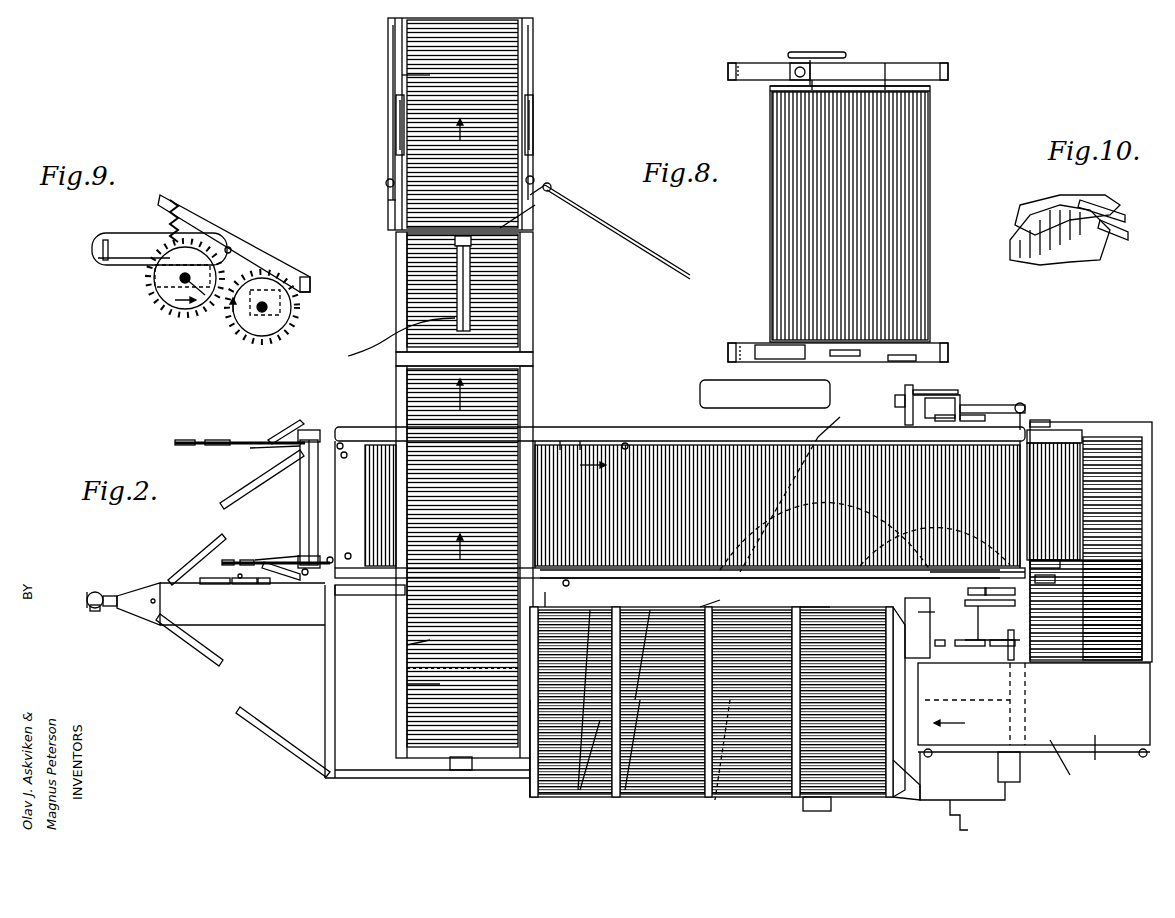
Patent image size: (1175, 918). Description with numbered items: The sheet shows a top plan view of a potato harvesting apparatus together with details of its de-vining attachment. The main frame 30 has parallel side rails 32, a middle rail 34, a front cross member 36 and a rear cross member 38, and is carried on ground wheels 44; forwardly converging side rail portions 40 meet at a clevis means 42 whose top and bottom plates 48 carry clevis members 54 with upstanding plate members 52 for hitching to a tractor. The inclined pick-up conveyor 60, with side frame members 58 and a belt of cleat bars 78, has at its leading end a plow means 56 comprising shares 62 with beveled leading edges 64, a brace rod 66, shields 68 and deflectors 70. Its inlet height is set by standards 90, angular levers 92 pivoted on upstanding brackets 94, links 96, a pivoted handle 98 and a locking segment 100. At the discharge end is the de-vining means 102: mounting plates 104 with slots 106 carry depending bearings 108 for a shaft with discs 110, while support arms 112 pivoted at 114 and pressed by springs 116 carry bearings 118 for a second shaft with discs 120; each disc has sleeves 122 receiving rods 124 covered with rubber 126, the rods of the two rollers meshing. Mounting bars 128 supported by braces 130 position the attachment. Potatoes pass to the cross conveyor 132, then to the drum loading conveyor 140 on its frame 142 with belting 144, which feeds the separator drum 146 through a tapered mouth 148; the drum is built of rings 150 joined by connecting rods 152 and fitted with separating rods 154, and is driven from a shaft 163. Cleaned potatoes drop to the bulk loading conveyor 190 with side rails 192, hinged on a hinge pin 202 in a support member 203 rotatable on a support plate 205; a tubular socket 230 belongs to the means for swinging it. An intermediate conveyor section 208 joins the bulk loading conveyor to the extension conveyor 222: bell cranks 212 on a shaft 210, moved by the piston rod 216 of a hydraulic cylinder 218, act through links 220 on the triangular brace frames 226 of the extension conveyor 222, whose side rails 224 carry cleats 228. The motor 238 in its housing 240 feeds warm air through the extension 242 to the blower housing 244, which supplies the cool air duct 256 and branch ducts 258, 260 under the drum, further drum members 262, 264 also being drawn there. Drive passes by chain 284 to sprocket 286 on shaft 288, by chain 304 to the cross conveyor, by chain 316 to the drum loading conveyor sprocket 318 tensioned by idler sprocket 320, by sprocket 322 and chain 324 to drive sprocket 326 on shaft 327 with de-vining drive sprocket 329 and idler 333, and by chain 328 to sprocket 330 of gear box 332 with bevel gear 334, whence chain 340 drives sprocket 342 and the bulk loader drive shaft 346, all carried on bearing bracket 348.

In FIG. 2, the main frame 30 is at (325, 778).
In FIG. 2, the side rails 32 is at (610, 427).
In FIG. 2, the middle rail 34 is at (368, 590).
In FIG. 2, the front cross member 36 is at (325, 686).
In FIG. 2, the rear cross member 38 is at (1020, 770).
In FIG. 2, the forwardly converging side rail portions 40 is at (220, 503).
In FIG. 2, the clevis means 42 is at (93, 590).
In FIG. 2, the ground wheels 44 is at (706, 398).
In FIG. 2, the top and bottom plates 48 is at (155, 585).
In FIG. 2, the upstanding plate members 52 is at (107, 606).
In FIG. 2, the clevis members 54 is at (93, 611).
In FIG. 2, the plow means 56 is at (180, 438).
In FIG. 2, the side frame members 58 is at (640, 445).
In FIG. 2, the pick-up conveyor 60 is at (627, 443).
In FIG. 2, the shares 62 is at (210, 440).
In FIG. 2, the beveled leading edges 64 is at (175, 443).
In FIG. 2, the brace rod 66 is at (310, 496).
In FIG. 2, the shields 68 is at (272, 452).
In FIG. 2, the deflectors 70 is at (284, 430).
In FIG. 2, the cleat bars 78 is at (583, 441).
In FIG. 2, the standards 90 is at (349, 558).
In FIG. 2, the angular levers 92 is at (340, 450).
In FIG. 2, the upstanding brackets 94 is at (310, 430).
In FIG. 2, the links 96 is at (262, 586).
In FIG. 2, the pivoted handle 98 is at (205, 584).
In FIG. 2, the locking segment 100 is at (240, 585).
In FIG. 2, the de-vining means 102 is at (1080, 435).
In FIG. 8, the de-vining means 102 is at (734, 60).
In FIG. 9, the de-vining means 102 is at (112, 233).
In FIG. 8, the mounting plates 104 is at (728, 70).
In FIG. 9, the mounting plates 104 is at (112, 262).
In FIG. 8, the slots 106 is at (740, 62).
In FIG. 9, the slots 106 is at (103, 256).
In FIG. 9, the depending bearing 108 is at (172, 282).
In FIG. 8, the discs 110 is at (770, 88).
In FIG. 9, the discs 110 is at (168, 298).
In FIG. 10, the discs 110 is at (1100, 260).
In FIG. 2, the support arms 112 is at (1055, 443).
In FIG. 8, the support arms 112 is at (950, 66).
In FIG. 9, the support arms 112 is at (306, 277).
In FIG. 8, the pivotal connection 114 is at (868, 63).
In FIG. 9, the pivotal connection 114 is at (230, 246).
In FIG. 8, the springs 116 is at (796, 52).
In FIG. 9, the springs 116 is at (170, 208).
In FIG. 9, the bearings 118 is at (255, 325).
In FIG. 2, the discs 120 is at (1110, 440).
In FIG. 8, the discs 120 is at (930, 88).
In FIG. 9, the discs 120 is at (268, 338).
In FIG. 8, the sleeves 122 is at (890, 85).
In FIG. 10, the sleeves 122 is at (1045, 195).
In FIG. 9, the rods 124 is at (205, 318).
In FIG. 10, the rods 124 is at (1120, 220).
In FIG. 8, the rubber covering 126 is at (775, 208).
In FIG. 9, the rubber covering 126 is at (175, 320).
In FIG. 10, the rubber covering 126 is at (1075, 245).
In FIG. 2, the mounting bars 128 is at (1024, 507).
In FIG. 2, the braces 130 is at (977, 500).
In FIG. 2, the cross conveyor 132 is at (1130, 440).
In FIG. 2, the drum loading conveyor 140 is at (1107, 754).
In FIG. 2, the drum loading conveyor frame 142 is at (1138, 758).
In FIG. 2, the belting 144 is at (1073, 763).
In FIG. 2, the dirt and vine separator drum 146 is at (530, 800).
In FIG. 2, the tapered mouth 148 is at (912, 795).
In FIG. 2, the rings 150 is at (530, 795).
In FIG. 2, the connecting rods 152 is at (555, 797).
In FIG. 2, the separating rods 154 is at (578, 797).
In FIG. 2, the shaft 163 is at (990, 695).
In FIG. 2, the bulk loading conveyor 190 is at (407, 668).
In FIG. 2, the side rails 192 is at (535, 360).
In FIG. 2, the hinge pin 202 is at (407, 645).
In FIG. 2, the support member 203 is at (407, 684).
In FIG. 2, the support plate 205 is at (460, 770).
In FIG. 2, the middle conveyor section 208 is at (397, 280).
In FIG. 2, the shaft 210 is at (532, 210).
In FIG. 2, the bell cranks 212 is at (392, 200).
In FIG. 2, the piston rod 216 is at (455, 240).
In FIG. 2, the hydraulic cylinder 218 is at (457, 268).
In FIG. 2, the links 220 is at (398, 116).
In FIG. 2, the extension conveyor 222 is at (532, 62).
In FIG. 2, the side rails 224 is at (402, 62).
In FIG. 2, the triangular brace frames 226 is at (400, 130).
In FIG. 2, the cleats 228 is at (402, 79).
In FIG. 2, the tubular socket 230 is at (556, 606).
In FIG. 2, the motor 238 is at (975, 810).
In FIG. 2, the motor housing 240 is at (1005, 795).
In FIG. 2, the motor housing extension 242 is at (848, 590).
In FIG. 2, the blower housing 244 is at (836, 419).
In FIG. 2, the cool air duct 256 is at (921, 624).
In FIG. 2, the branch duct 258 is at (710, 605).
In FIG. 2, the branch duct 260 is at (800, 597).
In FIG. 2, the tray 262 is at (650, 790).
In FIG. 2, the tray 264 is at (737, 762).
In FIG. 2, the chain 284 is at (972, 606).
In FIG. 2, the sprocket 286 is at (1050, 655).
In FIG. 2, the shaft 288 is at (978, 625).
In FIG. 2, the chain 304 is at (1007, 638).
In FIG. 2, the chain 316 is at (1030, 655).
In FIG. 2, the drum loading conveyor sprocket 318 is at (940, 616).
In FIG. 2, the idler sprocket 320 is at (1005, 655).
In FIG. 2, the sprocket 322 is at (962, 596).
In FIG. 2, the chain 324 is at (1026, 410).
In FIG. 2, the drive sprocket 326 is at (1022, 403).
In FIG. 2, the shaft 327 is at (386, 183).
In FIG. 2, the chain 328 is at (965, 425).
In FIG. 2, the de-vining assembly drive sprocket 329 is at (1045, 585).
In FIG. 2, the sprocket 330 is at (930, 425).
In FIG. 2, the gear box 332 is at (951, 411).
In FIG. 2, the idler 333 is at (1054, 595).
In FIG. 2, the bevel gear 334 is at (960, 392).
In FIG. 2, the chain 340 is at (910, 418).
In FIG. 2, the sprocket 342 is at (882, 406).
In FIG. 2, the bulk loader drive shaft 346 is at (625, 230).
In FIG. 2, the bearing bracket 348 is at (930, 390).